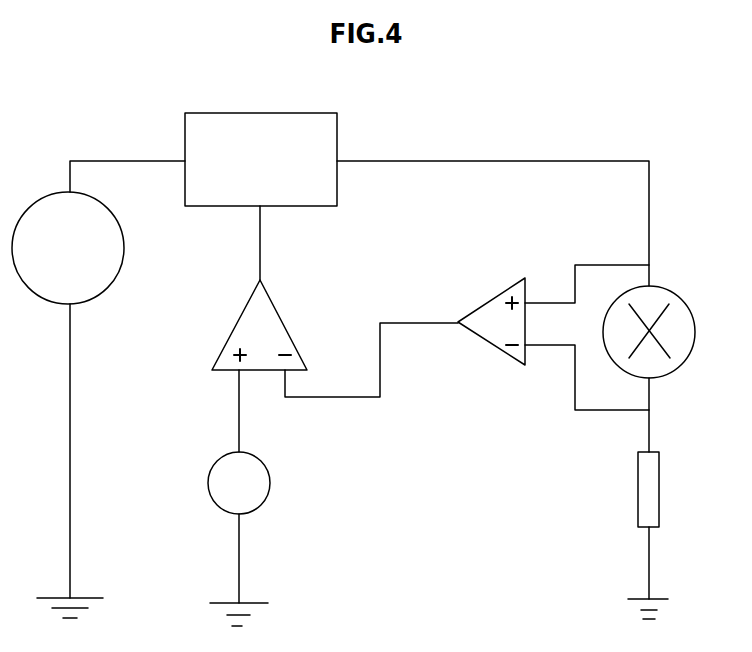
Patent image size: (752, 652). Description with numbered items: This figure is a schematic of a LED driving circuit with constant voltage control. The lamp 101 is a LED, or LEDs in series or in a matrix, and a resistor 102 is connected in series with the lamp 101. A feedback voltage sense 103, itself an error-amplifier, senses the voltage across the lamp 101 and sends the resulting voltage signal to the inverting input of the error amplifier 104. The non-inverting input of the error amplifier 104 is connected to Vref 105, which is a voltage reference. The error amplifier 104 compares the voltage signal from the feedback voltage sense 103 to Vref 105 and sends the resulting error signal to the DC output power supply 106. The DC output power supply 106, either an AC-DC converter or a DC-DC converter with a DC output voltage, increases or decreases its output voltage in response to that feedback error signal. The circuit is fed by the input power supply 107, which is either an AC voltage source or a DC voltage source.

The lamp 101 is at (673, 332).
The resistor 102 is at (679, 489).
The feedback voltage sense 103 is at (491, 313).
The error amplifier 104 is at (273, 325).
The Vref 105 is at (262, 483).
The DC output power supply 106 is at (288, 159).
The input power supply 107 is at (90, 248).